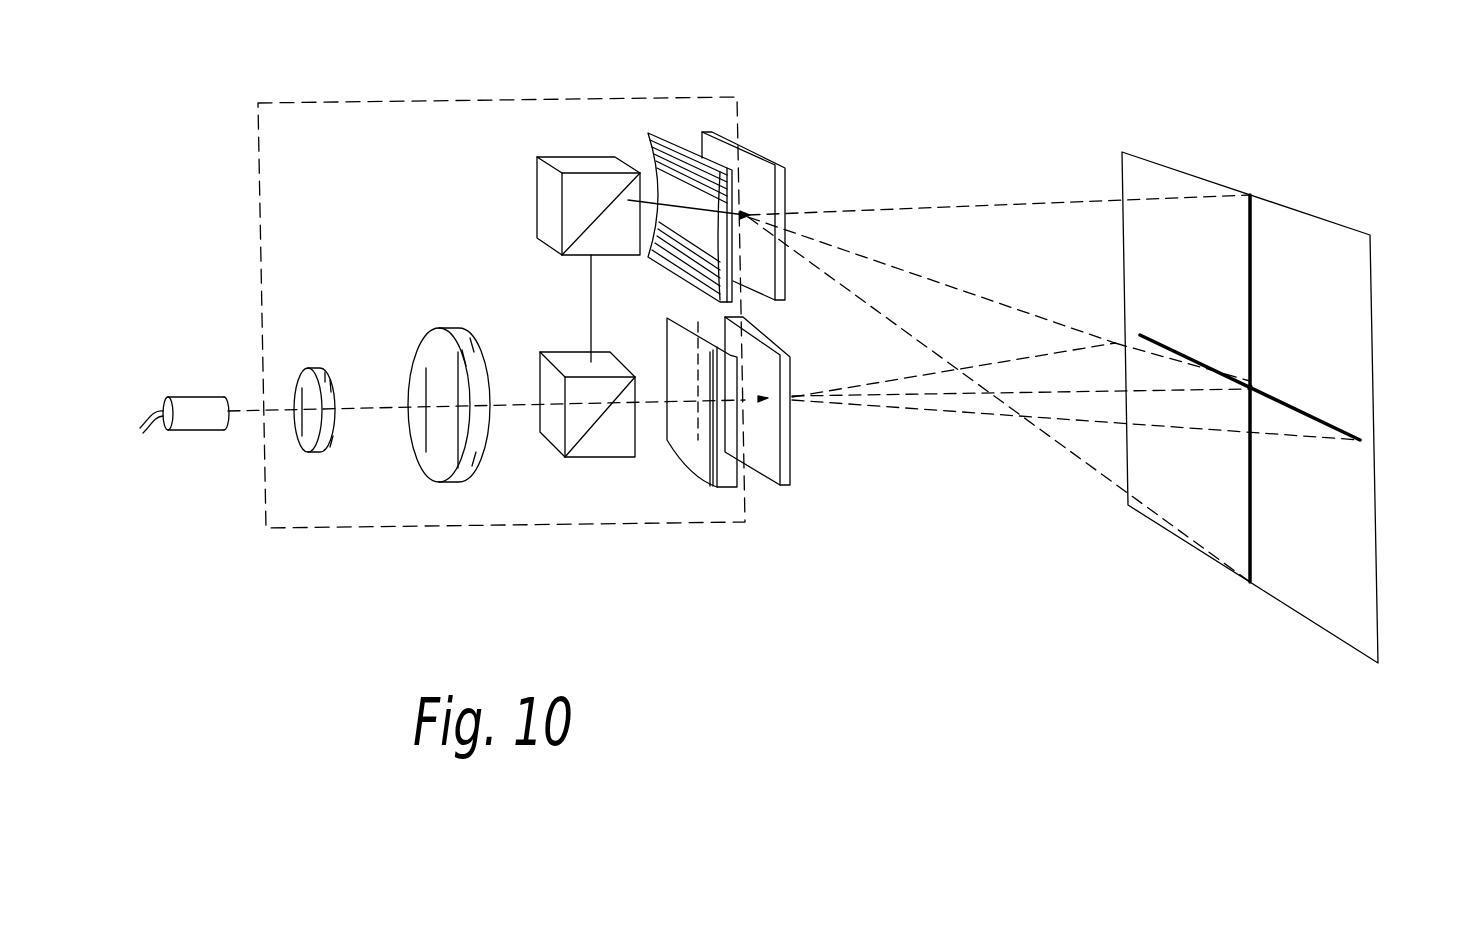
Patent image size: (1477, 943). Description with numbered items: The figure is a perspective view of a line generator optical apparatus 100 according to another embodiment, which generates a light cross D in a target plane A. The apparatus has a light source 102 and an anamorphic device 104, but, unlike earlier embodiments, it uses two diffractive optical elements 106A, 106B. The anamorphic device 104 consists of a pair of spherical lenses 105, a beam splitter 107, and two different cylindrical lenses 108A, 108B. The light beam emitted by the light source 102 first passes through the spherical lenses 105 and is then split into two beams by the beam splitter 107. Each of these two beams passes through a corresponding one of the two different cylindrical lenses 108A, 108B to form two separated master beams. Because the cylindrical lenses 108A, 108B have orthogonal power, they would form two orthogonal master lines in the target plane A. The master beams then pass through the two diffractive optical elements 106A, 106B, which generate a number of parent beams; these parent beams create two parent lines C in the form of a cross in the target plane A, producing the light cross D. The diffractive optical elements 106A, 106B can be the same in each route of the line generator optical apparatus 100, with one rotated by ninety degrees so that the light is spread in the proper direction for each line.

The line generator optical apparatus 100 is at (747, 547).
The light source 102 is at (190, 407).
The anamorphic device 104 is at (435, 530).
The spherical lenses 105 is at (435, 350).
The diffractive optical element 106A is at (792, 457).
The diffractive optical element 106B is at (780, 195).
The beam splitter 107 is at (600, 476).
The cylindrical lens 108A is at (692, 438).
The cylindrical lens 108B is at (676, 145).
The target plane A is at (1342, 298).
The parent lines C is at (1247, 297).
The light cross D is at (1268, 255).